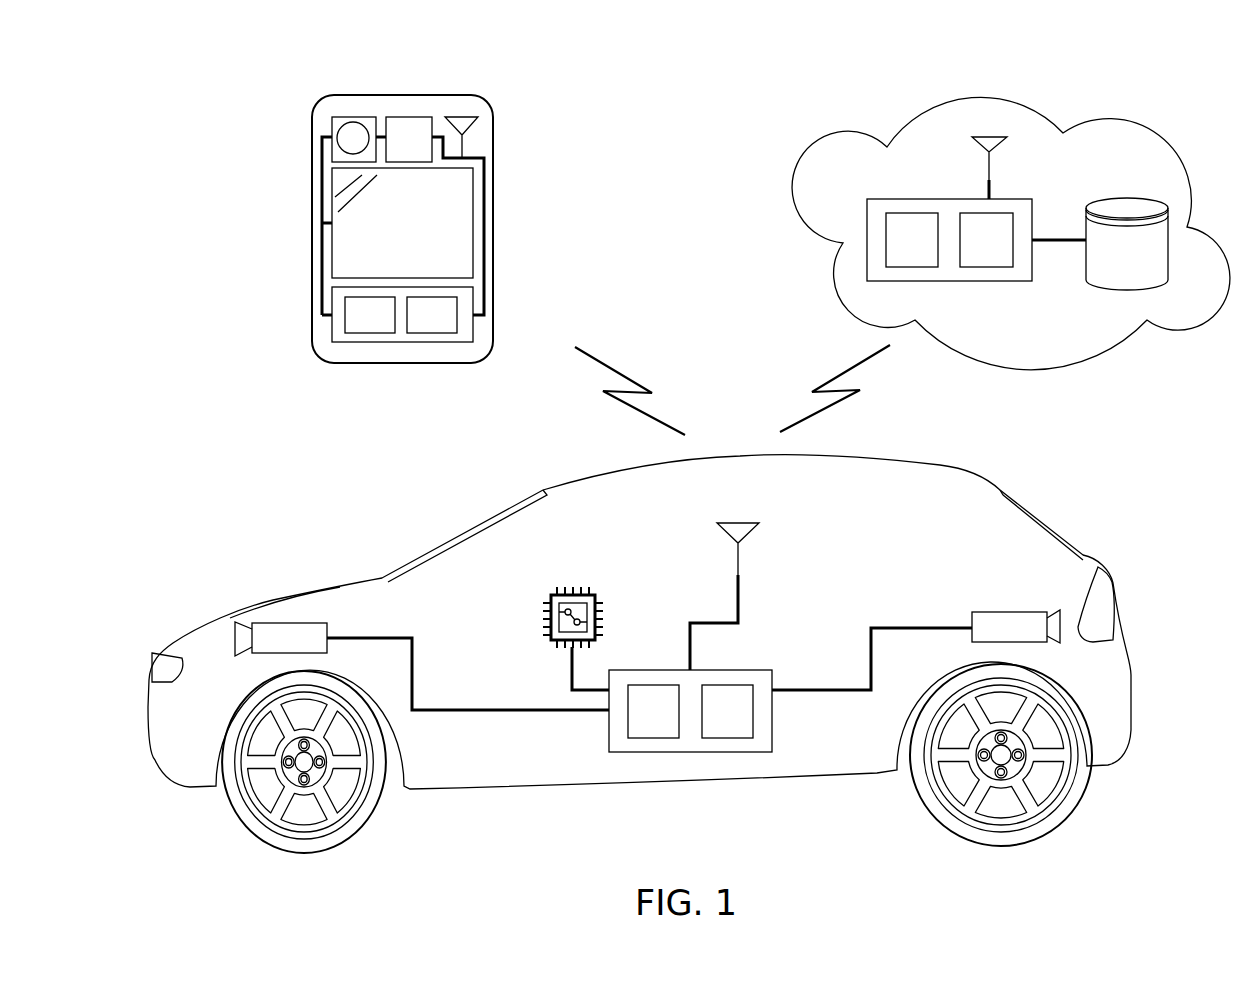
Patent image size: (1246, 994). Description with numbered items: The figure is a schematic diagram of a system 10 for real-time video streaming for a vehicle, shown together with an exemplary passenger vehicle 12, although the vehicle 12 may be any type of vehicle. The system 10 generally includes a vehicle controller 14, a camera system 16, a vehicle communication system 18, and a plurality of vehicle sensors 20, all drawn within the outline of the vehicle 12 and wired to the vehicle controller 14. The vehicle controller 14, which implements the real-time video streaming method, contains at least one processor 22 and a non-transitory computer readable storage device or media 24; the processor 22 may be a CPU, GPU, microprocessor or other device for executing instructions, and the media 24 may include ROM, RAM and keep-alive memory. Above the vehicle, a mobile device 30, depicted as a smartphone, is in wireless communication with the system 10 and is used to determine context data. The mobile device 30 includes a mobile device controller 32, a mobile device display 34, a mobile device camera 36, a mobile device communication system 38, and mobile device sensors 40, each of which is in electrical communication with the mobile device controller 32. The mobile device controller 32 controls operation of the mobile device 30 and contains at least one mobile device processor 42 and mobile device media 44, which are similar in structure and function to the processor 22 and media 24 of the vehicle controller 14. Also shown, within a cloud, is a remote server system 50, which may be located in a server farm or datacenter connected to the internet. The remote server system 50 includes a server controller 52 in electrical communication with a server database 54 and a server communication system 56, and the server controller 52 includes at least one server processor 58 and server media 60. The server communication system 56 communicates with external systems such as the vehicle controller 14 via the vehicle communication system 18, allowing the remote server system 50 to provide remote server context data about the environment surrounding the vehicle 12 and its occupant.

The system for real-time video streaming for a vehicle 10 is at (884, 509).
The vehicle 12 is at (277, 598).
The vehicle controller 14 is at (772, 752).
The camera system 16 is at (276, 650).
The vehicle communication system 18 is at (733, 540).
The vehicle sensors 20 is at (547, 640).
The processor 22 is at (640, 723).
The non-transitory computer readable storage device or media 24 is at (714, 723).
The mobile device 30 is at (316, 99).
The mobile device controller 32 is at (468, 342).
The mobile device display 34 is at (389, 235).
The mobile device camera 36 is at (337, 117).
The mobile device communication system 38 is at (473, 120).
The mobile device sensors 40 is at (395, 152).
The mobile device processor 42 is at (357, 327).
The mobile device non-transitory computer readable storage device or media 44 is at (419, 327).
The remote server system 50 is at (818, 160).
The server controller 52 is at (948, 281).
The server database 54 is at (1112, 265).
The server communication system 56 is at (983, 145).
The server processor 58 is at (899, 252).
The server non-transitory computer readable storage device or server media 60 is at (973, 252).